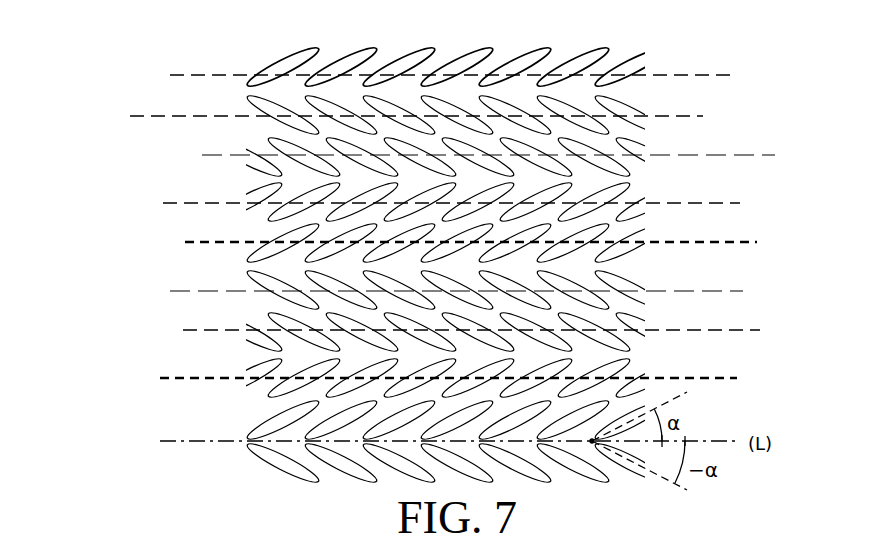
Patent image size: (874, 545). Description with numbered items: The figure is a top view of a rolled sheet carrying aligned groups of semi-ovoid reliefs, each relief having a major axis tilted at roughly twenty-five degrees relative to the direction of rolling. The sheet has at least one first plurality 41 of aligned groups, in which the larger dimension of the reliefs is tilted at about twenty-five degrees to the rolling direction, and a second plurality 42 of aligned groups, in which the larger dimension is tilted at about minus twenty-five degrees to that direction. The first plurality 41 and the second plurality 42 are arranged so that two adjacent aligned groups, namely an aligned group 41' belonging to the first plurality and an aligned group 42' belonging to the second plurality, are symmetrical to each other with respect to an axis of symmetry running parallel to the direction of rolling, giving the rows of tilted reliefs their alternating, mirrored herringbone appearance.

The first plurality of aligned groups 41 is at (394, 223).
The aligned group of the first plurality 41' is at (499, 137).
The aligned group of the second plurality 42' is at (480, 198).
The second plurality of aligned groups 42 is at (499, 290).